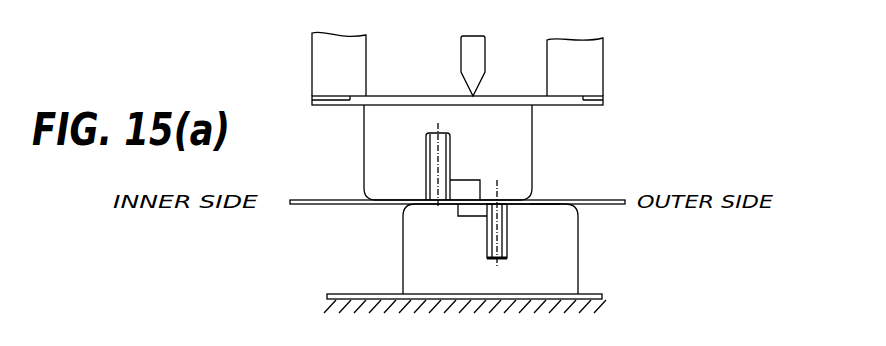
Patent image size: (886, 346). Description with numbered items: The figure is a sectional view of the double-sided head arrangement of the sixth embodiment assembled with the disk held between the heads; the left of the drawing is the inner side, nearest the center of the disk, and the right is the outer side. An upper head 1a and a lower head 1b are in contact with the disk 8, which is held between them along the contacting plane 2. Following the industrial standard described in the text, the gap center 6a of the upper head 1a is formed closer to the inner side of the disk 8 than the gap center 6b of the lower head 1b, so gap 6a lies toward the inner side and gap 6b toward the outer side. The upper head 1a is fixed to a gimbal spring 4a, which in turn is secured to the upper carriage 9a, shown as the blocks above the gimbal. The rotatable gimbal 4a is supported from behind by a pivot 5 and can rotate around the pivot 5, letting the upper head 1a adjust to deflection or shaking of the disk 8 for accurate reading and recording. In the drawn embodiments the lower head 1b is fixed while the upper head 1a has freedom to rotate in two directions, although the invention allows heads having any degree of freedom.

The upper carriage 9a is at (357, 29).
The pivot 5 is at (473, 52).
The upper gimbal spring 4a is at (505, 95).
The upper head 1a is at (522, 156).
The gap center of the upper head 6a is at (450, 146).
The disk 8 is at (590, 200).
The contacting plane 2 is at (543, 204).
The gap center of the lower head 6b is at (504, 248).
The lower head 1b is at (578, 252).